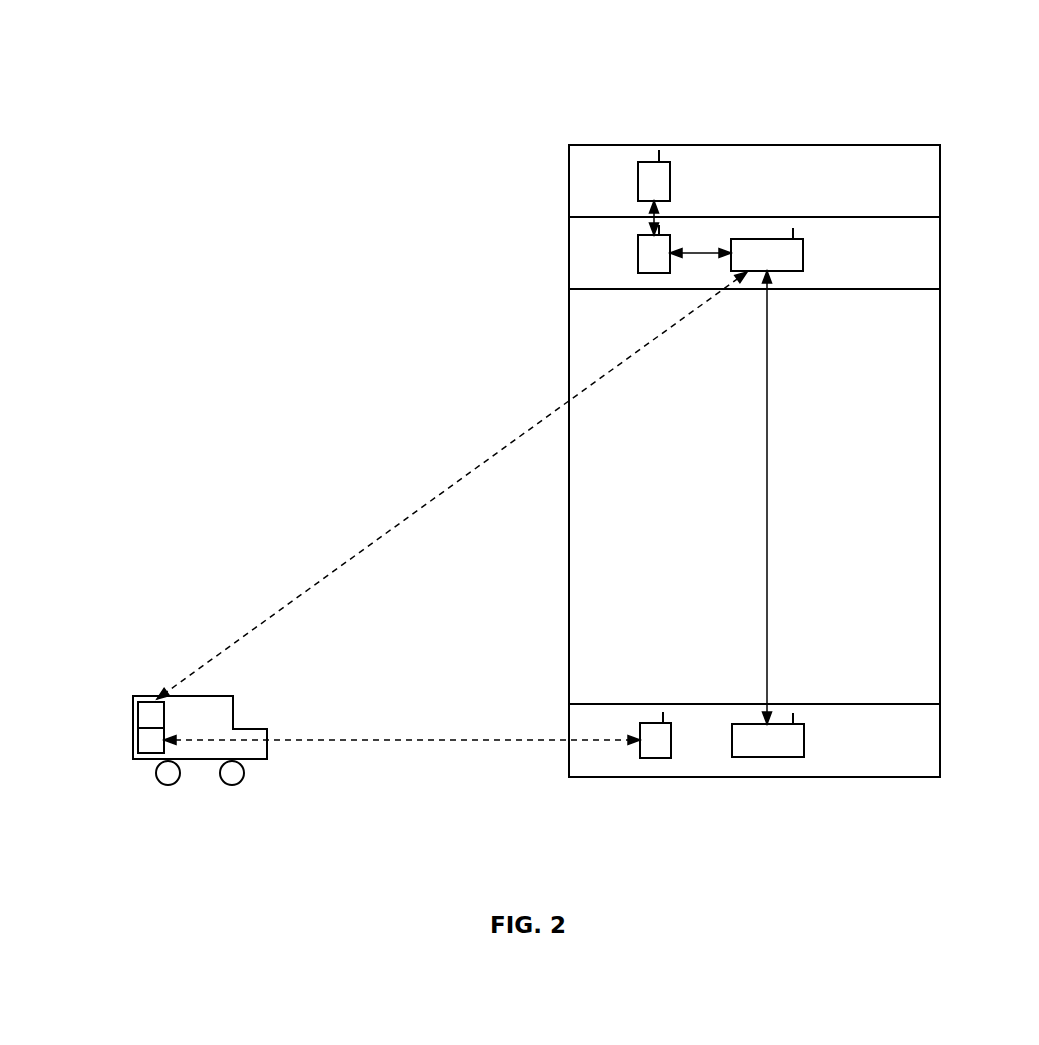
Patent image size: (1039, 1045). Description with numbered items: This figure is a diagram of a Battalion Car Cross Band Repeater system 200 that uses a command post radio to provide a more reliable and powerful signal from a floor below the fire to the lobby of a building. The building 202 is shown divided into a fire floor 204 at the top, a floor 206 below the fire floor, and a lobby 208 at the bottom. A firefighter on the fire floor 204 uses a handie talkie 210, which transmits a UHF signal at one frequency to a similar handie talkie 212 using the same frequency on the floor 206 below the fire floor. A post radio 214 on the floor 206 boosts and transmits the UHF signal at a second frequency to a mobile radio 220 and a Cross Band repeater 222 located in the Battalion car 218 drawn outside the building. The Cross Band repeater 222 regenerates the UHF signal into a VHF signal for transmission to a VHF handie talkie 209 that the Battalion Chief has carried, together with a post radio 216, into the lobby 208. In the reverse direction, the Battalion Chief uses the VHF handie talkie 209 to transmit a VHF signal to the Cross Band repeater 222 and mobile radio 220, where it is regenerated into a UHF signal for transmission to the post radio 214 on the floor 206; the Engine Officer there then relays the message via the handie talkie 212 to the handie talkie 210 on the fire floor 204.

The Battalion Car Cross Band Repeater system 200 is at (528, 96).
The building 202 is at (940, 488).
The fire floor 204 is at (870, 145).
The floor below the fire floor 206 is at (848, 289).
The lobby 208 is at (848, 704).
The VHF handie talkie 209 is at (657, 758).
The handie talkie 210 is at (652, 162).
The handie talkie 212 is at (652, 273).
The post radio 214 is at (787, 271).
The post radio 216 is at (767, 757).
The Battalion car 218 is at (200, 696).
The mobile radio 220 is at (138, 712).
The Cross Band repeater 222 is at (150, 753).